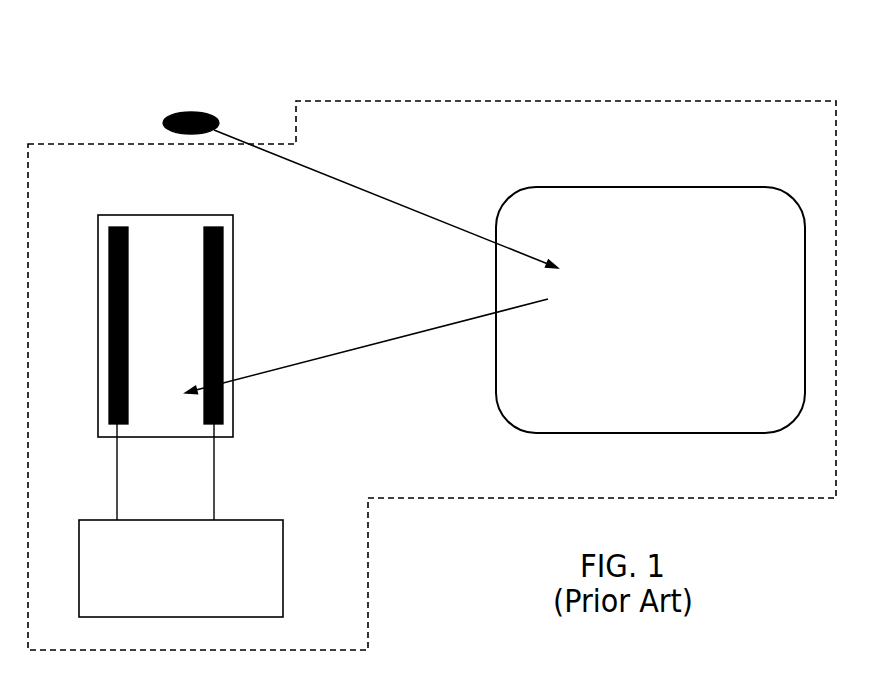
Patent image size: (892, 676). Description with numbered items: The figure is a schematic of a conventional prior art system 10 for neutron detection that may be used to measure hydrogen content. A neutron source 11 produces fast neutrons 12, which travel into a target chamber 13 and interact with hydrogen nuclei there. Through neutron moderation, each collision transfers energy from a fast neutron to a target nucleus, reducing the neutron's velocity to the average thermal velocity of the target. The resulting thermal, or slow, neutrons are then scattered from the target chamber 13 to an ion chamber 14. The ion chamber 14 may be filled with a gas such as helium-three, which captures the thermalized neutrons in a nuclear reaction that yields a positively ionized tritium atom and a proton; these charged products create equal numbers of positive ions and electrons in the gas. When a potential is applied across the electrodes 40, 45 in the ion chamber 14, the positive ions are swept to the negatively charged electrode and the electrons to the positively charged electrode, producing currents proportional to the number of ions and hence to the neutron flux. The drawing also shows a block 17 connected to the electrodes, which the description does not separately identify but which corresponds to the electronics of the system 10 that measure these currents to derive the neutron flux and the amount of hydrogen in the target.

The system for neutron detection 10 is at (684, 101).
The neutron source 11 is at (197, 112).
The fast neutrons 12 is at (380, 198).
The target chamber 13 is at (680, 388).
The ion chamber 14 is at (172, 326).
The controller 17 is at (168, 590).
The electrode 40 is at (109, 318).
The electrode 45 is at (223, 283).